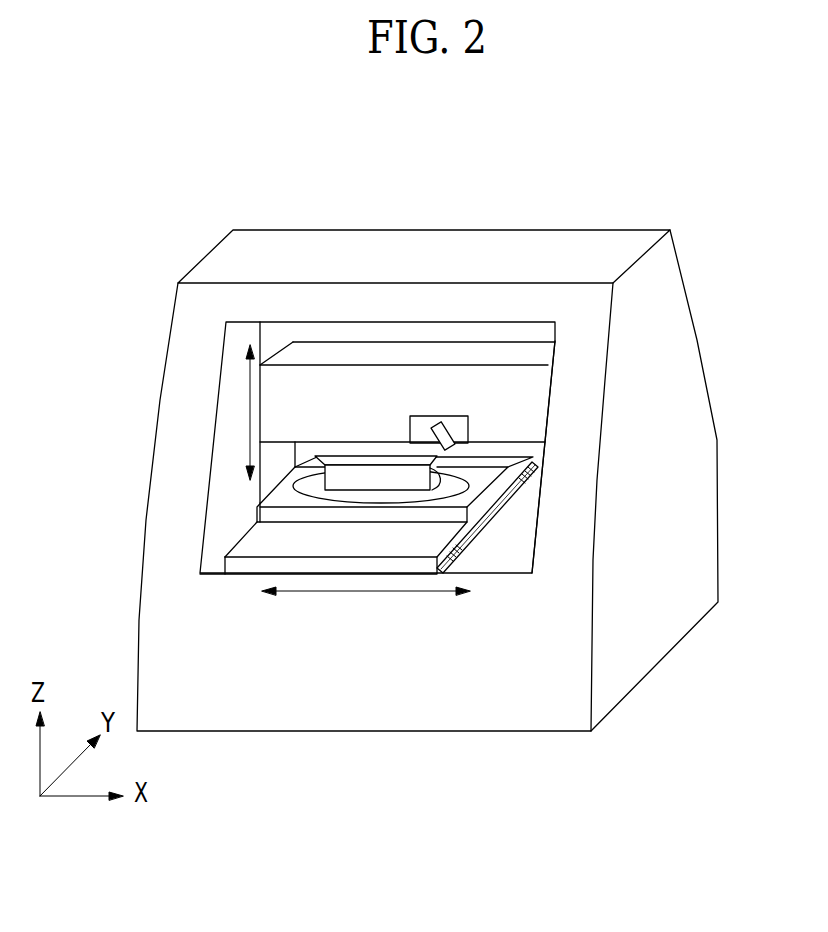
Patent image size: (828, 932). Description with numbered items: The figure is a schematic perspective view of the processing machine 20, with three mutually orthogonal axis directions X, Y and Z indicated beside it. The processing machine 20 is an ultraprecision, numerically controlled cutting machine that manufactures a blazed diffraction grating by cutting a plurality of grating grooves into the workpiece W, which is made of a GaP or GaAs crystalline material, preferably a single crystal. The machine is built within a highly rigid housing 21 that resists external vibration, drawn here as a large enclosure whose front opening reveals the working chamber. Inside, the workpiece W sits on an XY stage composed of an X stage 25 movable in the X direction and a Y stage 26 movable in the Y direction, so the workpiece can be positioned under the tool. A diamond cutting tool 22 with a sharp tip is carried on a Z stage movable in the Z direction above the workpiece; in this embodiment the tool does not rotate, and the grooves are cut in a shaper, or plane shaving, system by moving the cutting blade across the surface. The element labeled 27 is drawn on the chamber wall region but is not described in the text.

The processing machine 20 is at (325, 189).
The housing 21 is at (592, 243).
The diamond cutting tool 22 is at (452, 443).
The X stage 25 is at (240, 568).
The Y stage 26 is at (488, 492).
The side wall of processing chamber 27 is at (523, 425).
The workpiece W is at (343, 478).